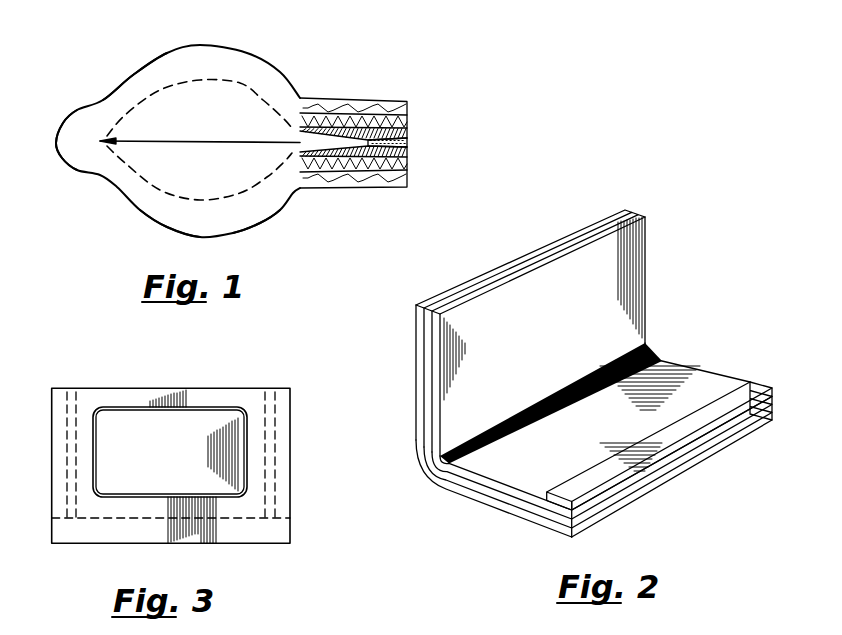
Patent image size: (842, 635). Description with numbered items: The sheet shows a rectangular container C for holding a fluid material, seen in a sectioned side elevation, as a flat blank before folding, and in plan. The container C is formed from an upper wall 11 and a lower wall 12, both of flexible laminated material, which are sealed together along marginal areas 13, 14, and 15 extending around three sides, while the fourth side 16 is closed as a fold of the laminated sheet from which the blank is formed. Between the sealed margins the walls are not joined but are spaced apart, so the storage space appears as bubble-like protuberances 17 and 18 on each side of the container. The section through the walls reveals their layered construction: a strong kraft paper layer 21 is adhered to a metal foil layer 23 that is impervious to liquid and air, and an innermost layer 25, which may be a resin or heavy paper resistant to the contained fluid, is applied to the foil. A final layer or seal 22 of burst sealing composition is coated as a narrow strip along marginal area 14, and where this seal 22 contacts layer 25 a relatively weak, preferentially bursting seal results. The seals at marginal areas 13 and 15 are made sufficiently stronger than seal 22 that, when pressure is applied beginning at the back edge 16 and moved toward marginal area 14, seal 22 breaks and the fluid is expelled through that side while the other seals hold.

In FIG. 1, the upper wall 11 is at (202, 45).
In FIG. 2, the upper wall 11 is at (416, 352).
In FIG. 3, the upper wall 11 is at (250, 397).
In FIG. 1, the lower wall 12 is at (182, 237).
In FIG. 2, the lower wall 12 is at (470, 504).
In FIG. 1, the marginal area 13 is at (168, 144).
In FIG. 3, the marginal area 13 is at (67, 468).
In FIG. 2, the marginal area 14 is at (677, 452).
In FIG. 3, the marginal area 14 is at (113, 527).
In FIG. 3, the marginal area 15 is at (273, 480).
In FIG. 1, the fourth side 16 is at (56, 138).
In FIG. 2, the fourth side 16 is at (417, 470).
In FIG. 3, the fourth side 16 is at (133, 388).
In FIG. 1, the bubble-like protuberance 17 is at (138, 61).
In FIG. 3, the bubble-like protuberance 17 is at (180, 466).
In FIG. 1, the bubble-like protuberance 18 is at (267, 226).
In FIG. 1, the kraft paper layer 21 is at (408, 103).
In FIG. 2, the kraft paper layer 21 is at (500, 506).
In FIG. 1, the seal 22 is at (408, 150).
In FIG. 2, the seal 22 is at (582, 485).
In FIG. 1, the metal foil layer 23 is at (408, 118).
In FIG. 2, the metal foil layer 23 is at (517, 504).
In FIG. 1, the innermost layer 25 is at (408, 135).
In FIG. 2, the innermost layer 25 is at (501, 488).
In FIG. 1, the container C is at (271, 49).
In FIG. 3, the container C is at (221, 548).